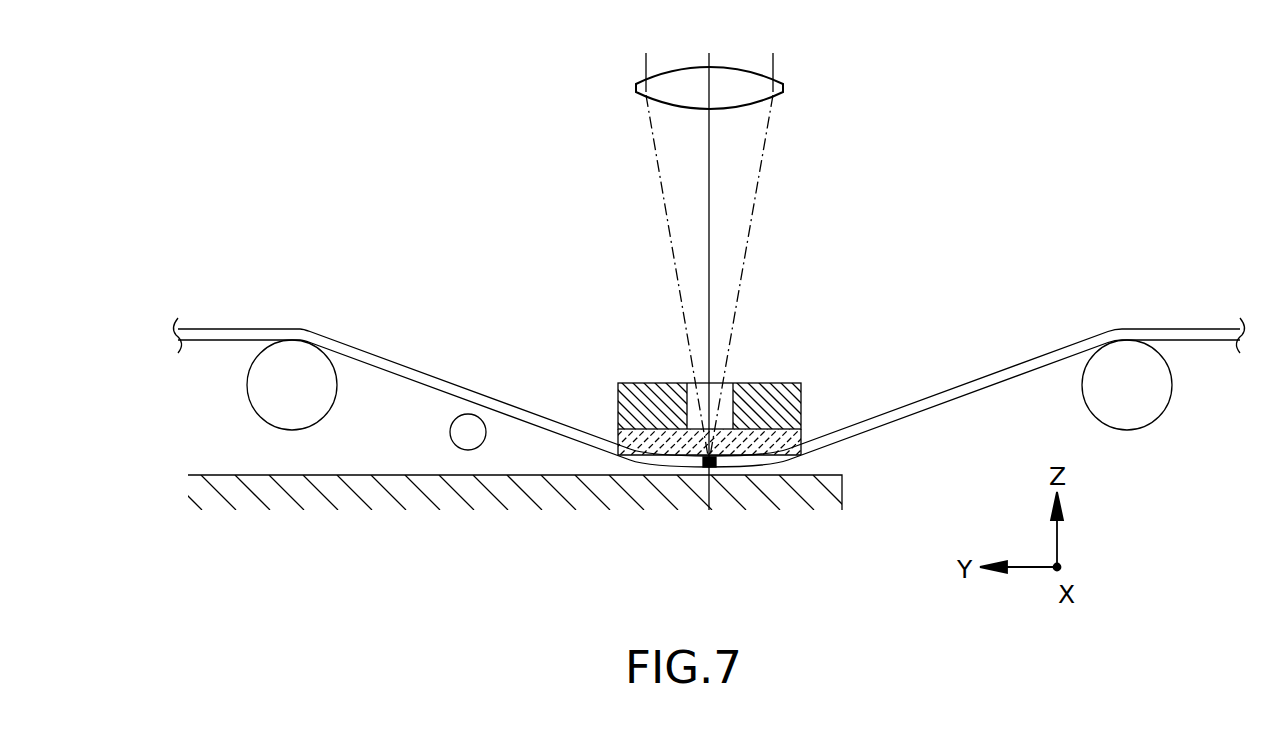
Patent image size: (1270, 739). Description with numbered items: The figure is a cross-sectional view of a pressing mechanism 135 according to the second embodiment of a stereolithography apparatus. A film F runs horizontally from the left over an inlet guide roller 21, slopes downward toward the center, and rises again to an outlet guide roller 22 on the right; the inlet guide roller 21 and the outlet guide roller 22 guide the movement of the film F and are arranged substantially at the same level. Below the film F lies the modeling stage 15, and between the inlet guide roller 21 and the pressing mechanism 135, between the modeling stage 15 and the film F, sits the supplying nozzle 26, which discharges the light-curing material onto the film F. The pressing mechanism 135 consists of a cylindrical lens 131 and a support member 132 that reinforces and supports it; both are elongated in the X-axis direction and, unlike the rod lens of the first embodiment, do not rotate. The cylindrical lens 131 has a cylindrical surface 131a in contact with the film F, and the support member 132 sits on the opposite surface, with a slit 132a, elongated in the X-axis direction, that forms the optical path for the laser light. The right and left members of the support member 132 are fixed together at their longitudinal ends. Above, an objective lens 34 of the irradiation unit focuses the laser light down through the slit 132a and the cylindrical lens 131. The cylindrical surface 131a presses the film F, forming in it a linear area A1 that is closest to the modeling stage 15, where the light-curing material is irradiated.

The objective lens 34 is at (786, 85).
The film F is at (410, 369).
The inlet guide roller 21 is at (290, 362).
The outlet guide roller 22 is at (1133, 362).
The supplying nozzle 26 is at (470, 426).
The modeling stage 15 is at (212, 476).
The pressing mechanism 135 is at (747, 434).
The support member 132 is at (739, 365).
The slit 132a is at (698, 392).
The cylindrical lens 131 is at (757, 507).
The cylindrical surface 131a is at (677, 457).
The linear area A1 is at (713, 478).